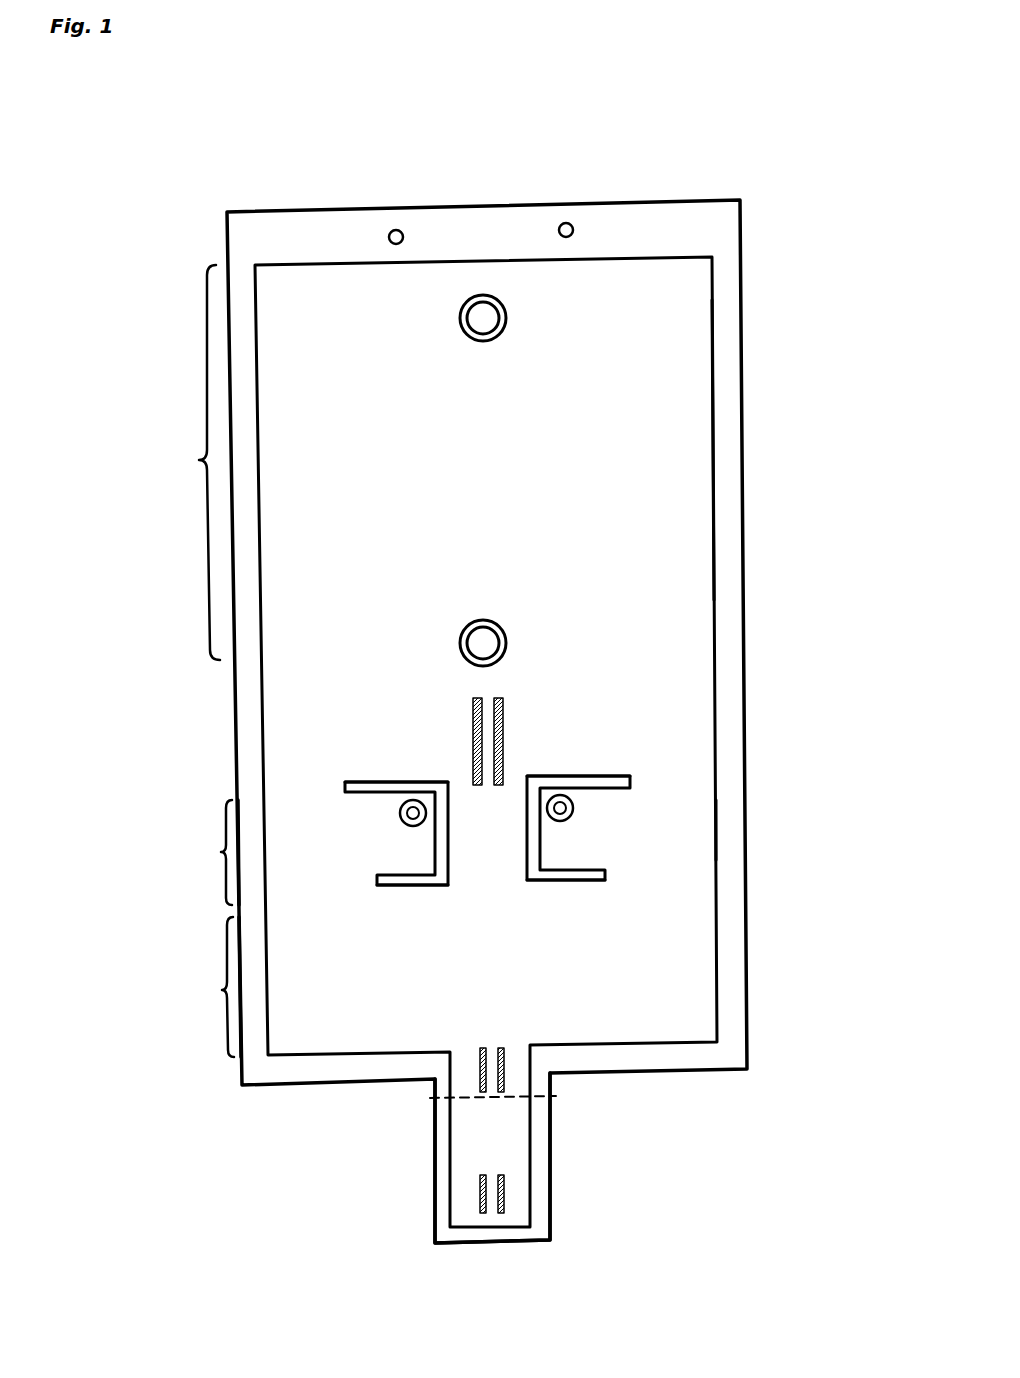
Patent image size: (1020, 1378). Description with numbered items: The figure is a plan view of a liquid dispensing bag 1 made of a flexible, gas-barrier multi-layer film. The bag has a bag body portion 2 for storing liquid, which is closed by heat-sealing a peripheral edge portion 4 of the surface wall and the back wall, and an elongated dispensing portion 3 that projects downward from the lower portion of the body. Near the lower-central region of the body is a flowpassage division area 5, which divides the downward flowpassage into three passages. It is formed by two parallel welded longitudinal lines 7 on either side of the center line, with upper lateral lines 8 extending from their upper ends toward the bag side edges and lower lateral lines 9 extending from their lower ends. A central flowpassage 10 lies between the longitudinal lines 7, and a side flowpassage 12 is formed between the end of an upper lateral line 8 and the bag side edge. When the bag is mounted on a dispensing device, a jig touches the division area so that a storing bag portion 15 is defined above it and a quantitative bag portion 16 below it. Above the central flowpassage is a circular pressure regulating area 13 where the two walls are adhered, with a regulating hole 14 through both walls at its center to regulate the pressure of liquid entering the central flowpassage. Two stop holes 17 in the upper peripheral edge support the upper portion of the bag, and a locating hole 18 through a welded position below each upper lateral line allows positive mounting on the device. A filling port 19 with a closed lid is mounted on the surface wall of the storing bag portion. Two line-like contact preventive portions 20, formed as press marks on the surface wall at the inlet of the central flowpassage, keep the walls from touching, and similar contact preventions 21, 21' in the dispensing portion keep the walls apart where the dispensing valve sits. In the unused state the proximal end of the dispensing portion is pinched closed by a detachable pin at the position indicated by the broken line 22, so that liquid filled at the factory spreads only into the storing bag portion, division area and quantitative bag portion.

The liquid dispensing bag 1 is at (540, 721).
The bag body portion 2 is at (536, 721).
The dispensing portion 3 is at (524, 1158).
The peripheral edge portion 4 is at (853, 365).
The flowpassage division area 5 is at (220, 852).
The longitudinal lines 7 is at (490, 830).
The upper lateral lines 8 is at (488, 757).
The lower lateral lines 9 is at (491, 922).
The central flowpassage 10 is at (589, 1028).
The side flowpassage 12 is at (775, 821).
The pressure regulating area 13 is at (563, 623).
The regulating hole 14 is at (566, 592).
The storing bag portion 15 is at (517, 462).
The quantitative bag portion 16 is at (215, 987).
The stop holes 17 is at (490, 175).
The locating hole 18 is at (486, 808).
The filling port 19 is at (503, 225).
The contact preventive portions 20 is at (471, 720).
The contact prevention 21 is at (563, 1095).
The contact prevention 21' is at (552, 1220).
The broken line 22 is at (461, 1157).